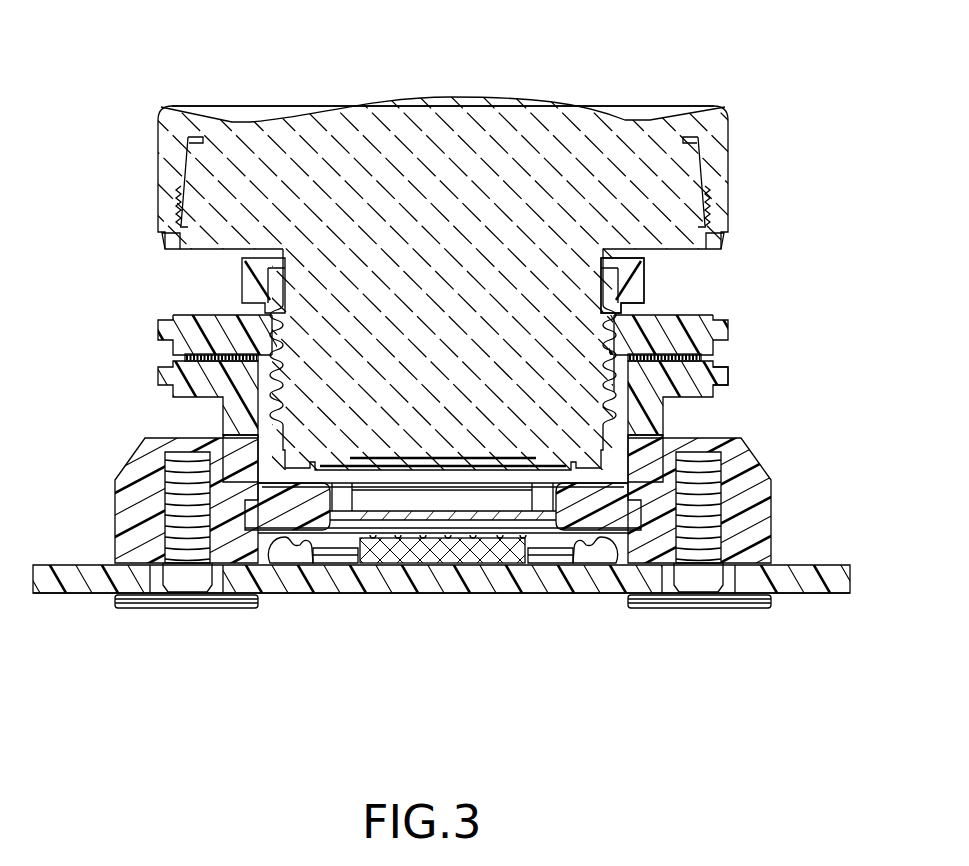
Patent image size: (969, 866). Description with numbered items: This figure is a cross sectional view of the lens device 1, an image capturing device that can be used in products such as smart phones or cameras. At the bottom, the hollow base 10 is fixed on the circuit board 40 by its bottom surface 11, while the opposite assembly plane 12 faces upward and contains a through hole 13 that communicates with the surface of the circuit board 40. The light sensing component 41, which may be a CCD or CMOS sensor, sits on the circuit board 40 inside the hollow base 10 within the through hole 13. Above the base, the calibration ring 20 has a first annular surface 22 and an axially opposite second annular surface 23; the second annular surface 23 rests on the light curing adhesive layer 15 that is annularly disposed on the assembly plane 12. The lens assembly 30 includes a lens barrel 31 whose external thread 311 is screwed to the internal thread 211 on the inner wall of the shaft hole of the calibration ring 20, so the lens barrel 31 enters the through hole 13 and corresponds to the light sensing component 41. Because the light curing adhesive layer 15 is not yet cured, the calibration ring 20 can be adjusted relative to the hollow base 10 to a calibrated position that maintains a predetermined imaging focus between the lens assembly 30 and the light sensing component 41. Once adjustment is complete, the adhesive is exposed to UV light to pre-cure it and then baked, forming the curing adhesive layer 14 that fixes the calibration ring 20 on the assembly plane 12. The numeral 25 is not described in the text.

The lens device 1 is at (796, 100).
The hollow base 10 is at (755, 473).
The bottom surface 11 is at (740, 565).
The assembly plane 12 is at (717, 356).
The through hole 13 is at (620, 374).
The curing adhesive layer 14 is at (655, 345).
The light curing adhesive layer 15 is at (622, 285).
The calibration ring 20 is at (728, 318).
The first annular surface 22 is at (177, 317).
The second annular surface 23 is at (177, 360).
The retaining cap 25 is at (247, 280).
The lens assembly 30 is at (163, 107).
The lens barrel 31 is at (580, 426).
The circuit board 40 is at (805, 565).
The light sensing component 41 is at (440, 563).
The internal thread 211 is at (270, 325).
The external thread 311 is at (277, 403).